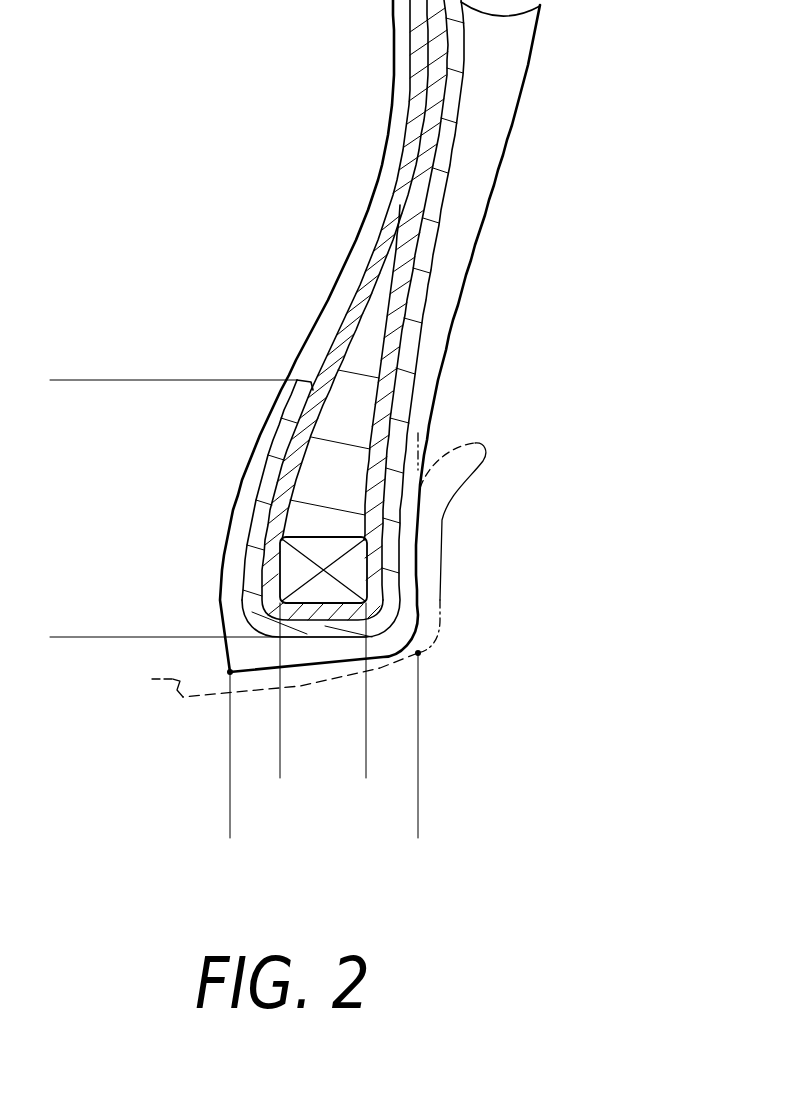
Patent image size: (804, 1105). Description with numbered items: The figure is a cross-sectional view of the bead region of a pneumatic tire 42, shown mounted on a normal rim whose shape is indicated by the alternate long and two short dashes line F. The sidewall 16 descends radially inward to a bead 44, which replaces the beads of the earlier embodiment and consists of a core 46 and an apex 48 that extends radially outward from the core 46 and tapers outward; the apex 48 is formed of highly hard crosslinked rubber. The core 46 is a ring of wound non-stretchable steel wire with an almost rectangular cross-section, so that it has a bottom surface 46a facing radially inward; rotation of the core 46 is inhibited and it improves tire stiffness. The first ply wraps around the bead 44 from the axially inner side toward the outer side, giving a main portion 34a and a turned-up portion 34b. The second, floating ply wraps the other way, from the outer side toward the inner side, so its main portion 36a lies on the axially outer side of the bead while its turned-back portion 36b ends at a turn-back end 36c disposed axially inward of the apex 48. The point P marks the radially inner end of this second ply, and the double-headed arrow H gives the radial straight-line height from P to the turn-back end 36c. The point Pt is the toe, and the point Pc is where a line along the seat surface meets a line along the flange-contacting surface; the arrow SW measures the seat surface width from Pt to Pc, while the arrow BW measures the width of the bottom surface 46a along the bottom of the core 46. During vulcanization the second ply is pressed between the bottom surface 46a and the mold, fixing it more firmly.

The tire 42 is at (156, 93).
The sidewall 16 is at (500, 120).
The main portion of first ply 34a is at (293, 455).
The turned-up portion of first ply 34b is at (407, 287).
The main portion of second ply 36a is at (410, 348).
The turned-back portion of second ply 36b is at (262, 498).
The turn-back end 36c is at (310, 380).
The apex 48 is at (355, 498).
The core 46 is at (360, 570).
The bottom surface of core 46a is at (325, 608).
The bead 44 is at (505, 463).
The rim shape line F is at (483, 445).
The toe point Pt is at (230, 672).
The intersection point Pc is at (418, 653).
The inner end of second ply P is at (325, 640).
The height H is at (52, 380).
The bottom surface width BW is at (353, 771).
The seat surface width SW is at (405, 831).